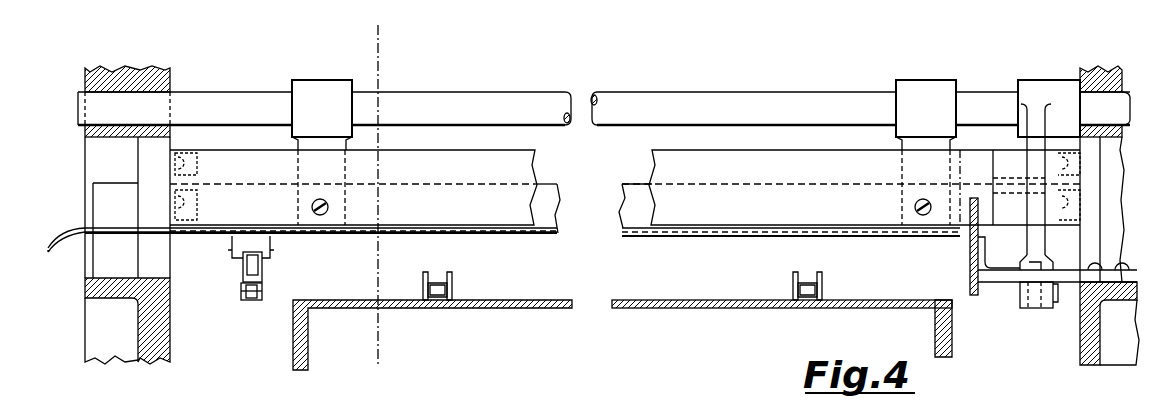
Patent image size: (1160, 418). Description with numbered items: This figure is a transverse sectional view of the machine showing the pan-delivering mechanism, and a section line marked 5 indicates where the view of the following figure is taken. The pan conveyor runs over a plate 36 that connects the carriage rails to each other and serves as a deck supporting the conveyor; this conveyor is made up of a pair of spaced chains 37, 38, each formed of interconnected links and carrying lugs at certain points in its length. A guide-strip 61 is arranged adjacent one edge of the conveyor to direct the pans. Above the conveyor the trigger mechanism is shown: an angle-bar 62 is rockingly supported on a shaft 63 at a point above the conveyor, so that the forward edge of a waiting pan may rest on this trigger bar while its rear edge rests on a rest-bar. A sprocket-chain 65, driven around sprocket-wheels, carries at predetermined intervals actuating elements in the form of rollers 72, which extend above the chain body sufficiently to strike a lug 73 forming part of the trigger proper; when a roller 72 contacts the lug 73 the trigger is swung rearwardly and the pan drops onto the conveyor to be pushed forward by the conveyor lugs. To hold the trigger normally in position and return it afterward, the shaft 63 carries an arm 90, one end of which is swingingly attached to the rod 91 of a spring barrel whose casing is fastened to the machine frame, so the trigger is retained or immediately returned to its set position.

The shaft 63 is at (637, 104).
The angle-bar 62 is at (622, 200).
The lug 73 is at (232, 250).
The roller 72 is at (262, 265).
The sprocket-chain 65 is at (241, 293).
The plate 36 is at (650, 300).
The chain 38 is at (426, 290).
The chain 37 is at (822, 295).
The guide-strip 61 is at (970, 258).
The arm 90 is at (1033, 245).
The rod 91 is at (1036, 308).
The section line 5 is at (342, 41).